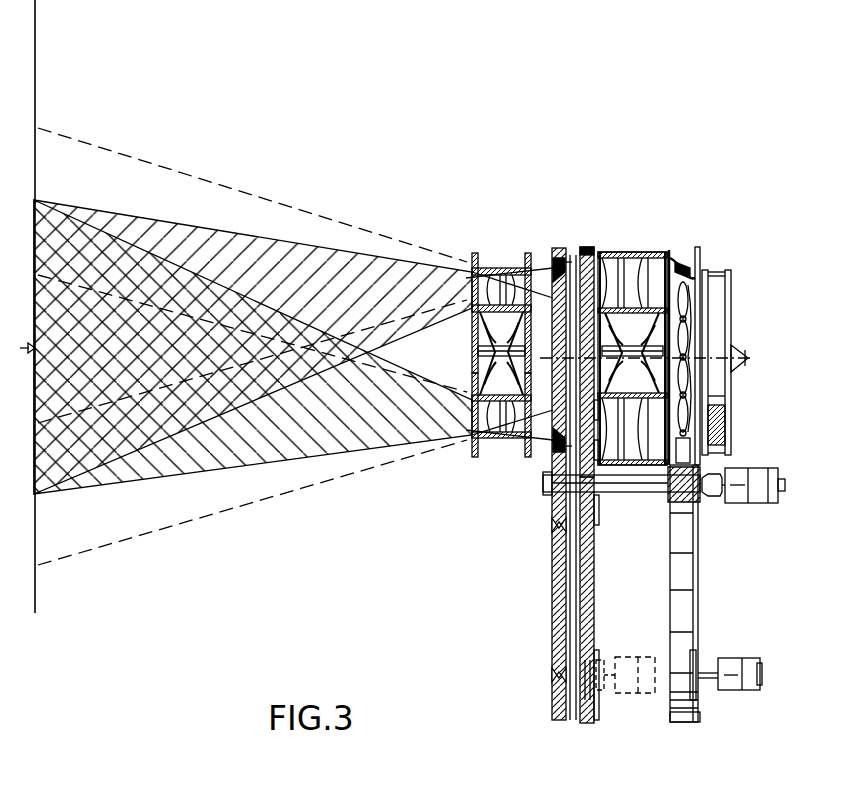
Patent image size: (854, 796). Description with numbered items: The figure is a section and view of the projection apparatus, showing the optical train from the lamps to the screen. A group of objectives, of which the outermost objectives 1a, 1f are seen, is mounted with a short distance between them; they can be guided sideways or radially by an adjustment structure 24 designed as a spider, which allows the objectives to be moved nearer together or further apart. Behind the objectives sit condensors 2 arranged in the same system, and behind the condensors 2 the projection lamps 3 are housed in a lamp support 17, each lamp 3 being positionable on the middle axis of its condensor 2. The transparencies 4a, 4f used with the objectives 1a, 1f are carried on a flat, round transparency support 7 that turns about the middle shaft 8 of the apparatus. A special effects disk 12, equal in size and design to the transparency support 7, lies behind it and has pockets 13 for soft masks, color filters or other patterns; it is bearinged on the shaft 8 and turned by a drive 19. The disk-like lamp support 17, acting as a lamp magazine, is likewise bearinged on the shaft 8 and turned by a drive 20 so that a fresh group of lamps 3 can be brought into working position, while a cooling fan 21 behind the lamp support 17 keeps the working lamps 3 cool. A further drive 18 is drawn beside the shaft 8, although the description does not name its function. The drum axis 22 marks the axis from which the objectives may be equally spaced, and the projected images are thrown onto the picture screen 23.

The objective 1a is at (500, 267).
The objective 1f is at (503, 439).
The condensor 2 is at (637, 252).
The projection lamp 3 is at (686, 276).
The transparency 4a is at (553, 280).
The transparency 4f is at (553, 440).
The transparency support 7 is at (558, 262).
The middle shaft 8 is at (632, 495).
The special effects disk 12 is at (591, 247).
The pockets 13 is at (592, 554).
The lamp support 17 is at (683, 581).
The first motor 18 is at (752, 505).
The drive for special effects disk 19 is at (628, 694).
The drive for lamp support 20 is at (738, 694).
The cooling fan 21 is at (722, 296).
The drum axis 22 is at (745, 358).
The picture screen 23 is at (35, 595).
The adjustment structure 24 is at (498, 346).